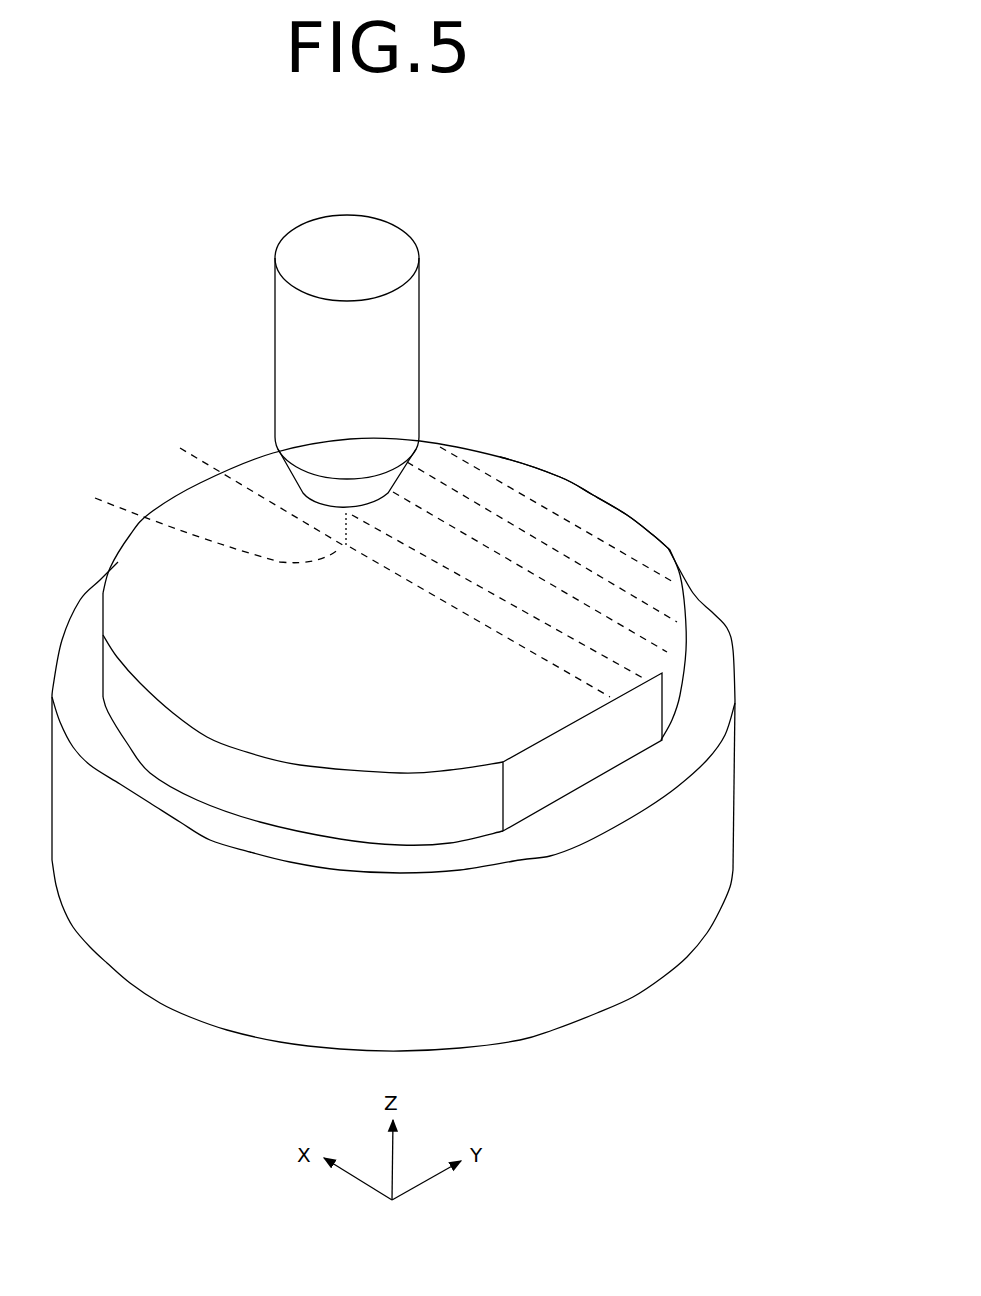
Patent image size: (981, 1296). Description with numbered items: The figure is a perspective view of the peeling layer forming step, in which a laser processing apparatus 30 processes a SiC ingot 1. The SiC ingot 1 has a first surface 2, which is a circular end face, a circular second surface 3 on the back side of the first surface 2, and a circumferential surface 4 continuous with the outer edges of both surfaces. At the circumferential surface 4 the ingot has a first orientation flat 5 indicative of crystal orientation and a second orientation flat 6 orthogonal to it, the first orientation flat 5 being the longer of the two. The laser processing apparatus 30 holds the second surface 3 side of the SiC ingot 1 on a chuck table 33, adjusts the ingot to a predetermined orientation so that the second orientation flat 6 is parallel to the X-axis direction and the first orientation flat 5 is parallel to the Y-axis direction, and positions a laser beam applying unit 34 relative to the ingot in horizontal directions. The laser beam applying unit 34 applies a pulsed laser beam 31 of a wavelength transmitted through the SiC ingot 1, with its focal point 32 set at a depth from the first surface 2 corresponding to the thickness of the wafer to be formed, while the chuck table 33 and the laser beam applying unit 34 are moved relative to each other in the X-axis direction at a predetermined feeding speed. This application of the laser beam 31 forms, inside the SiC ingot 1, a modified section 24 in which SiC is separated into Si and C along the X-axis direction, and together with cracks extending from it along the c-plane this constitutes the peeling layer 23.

The SiC ingot 1 is at (482, 412).
The first surface 2 is at (495, 670).
The second surface 3 is at (434, 843).
The circumferential surface 4 is at (322, 822).
The first orientation flat 5 is at (617, 740).
The second orientation flat 6 is at (631, 514).
The peeling layer 23 is at (508, 515).
The modified section 24 is at (513, 556).
The laser processing apparatus 30 is at (601, 256).
The laser beam 31 is at (244, 491).
The focal point 32 is at (197, 525).
The chuck table 33 is at (660, 935).
The laser beam applying unit 34 is at (433, 316).